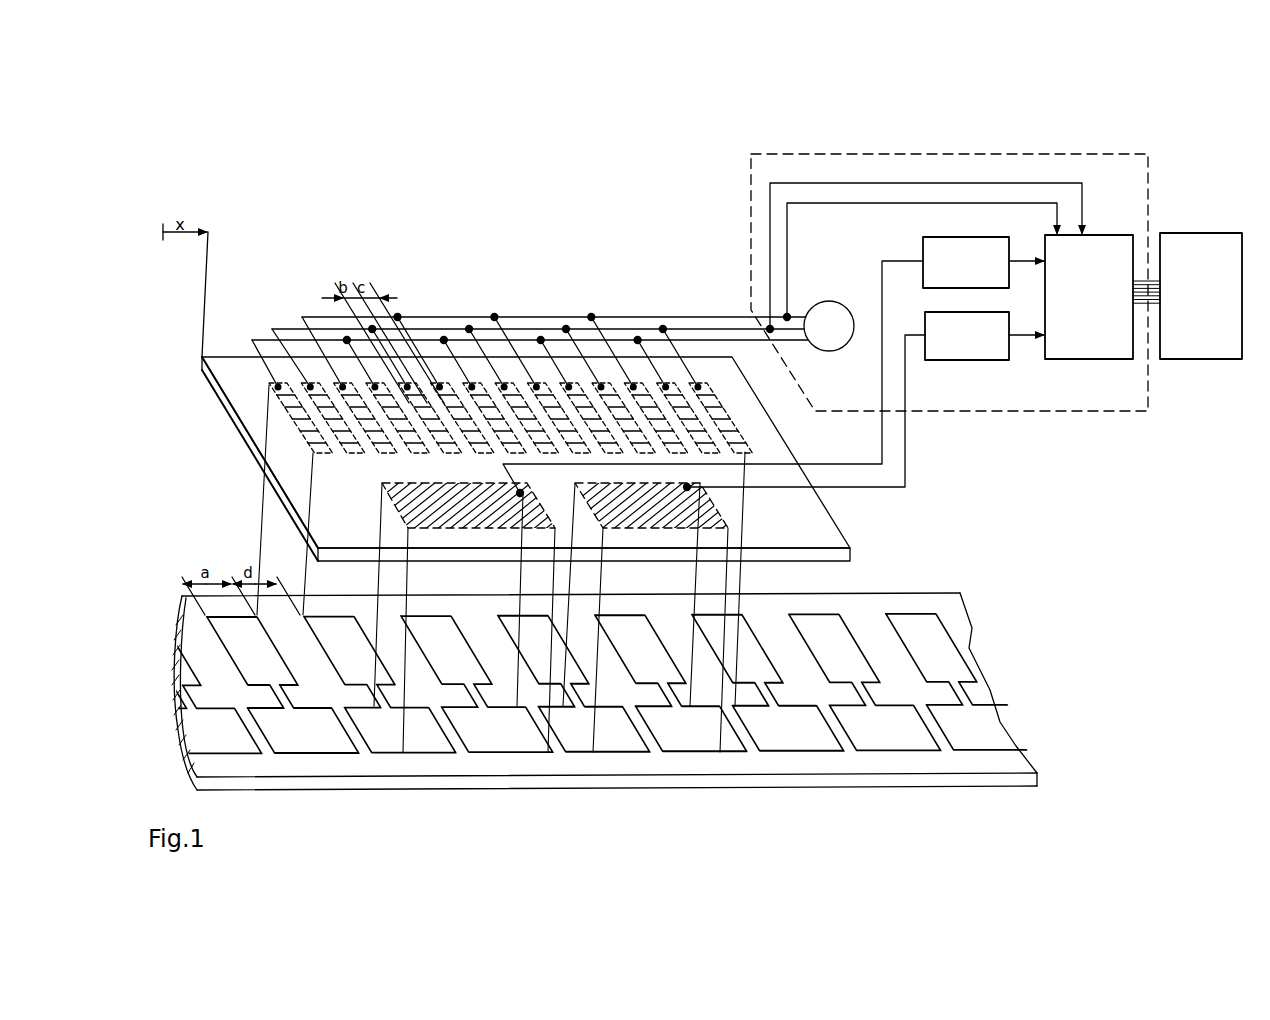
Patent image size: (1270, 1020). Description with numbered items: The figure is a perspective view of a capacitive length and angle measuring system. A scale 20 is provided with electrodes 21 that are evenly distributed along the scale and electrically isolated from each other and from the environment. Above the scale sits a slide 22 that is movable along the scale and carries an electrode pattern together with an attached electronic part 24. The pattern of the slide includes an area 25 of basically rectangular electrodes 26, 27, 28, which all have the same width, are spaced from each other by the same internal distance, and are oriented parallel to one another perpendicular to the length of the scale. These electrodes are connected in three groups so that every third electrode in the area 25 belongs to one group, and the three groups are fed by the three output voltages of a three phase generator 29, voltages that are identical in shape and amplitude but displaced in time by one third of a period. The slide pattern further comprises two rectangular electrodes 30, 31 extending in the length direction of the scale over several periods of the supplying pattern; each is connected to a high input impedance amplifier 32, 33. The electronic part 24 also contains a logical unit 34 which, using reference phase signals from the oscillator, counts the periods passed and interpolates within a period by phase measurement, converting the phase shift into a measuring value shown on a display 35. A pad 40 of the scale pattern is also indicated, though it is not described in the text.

The scale 20 is at (803, 767).
The electrodes 21 is at (627, 753).
The slide 22 is at (232, 392).
The electronic part 24 is at (750, 204).
The area 25 is at (502, 380).
The rectangular electrode 26 is at (268, 382).
The rectangular electrode 27 is at (300, 382).
The rectangular electrode 28 is at (331, 382).
The three phase generator 29 is at (831, 301).
The rectangular electrode 30 is at (404, 518).
The rectangular electrode 31 is at (727, 520).
The high input impedance amplifier 32 is at (923, 247).
The high input impedance amplifier 33 is at (1008, 361).
The logical unit 34 is at (1091, 360).
The display 35 is at (1193, 360).
The electrode pad 40 is at (912, 622).